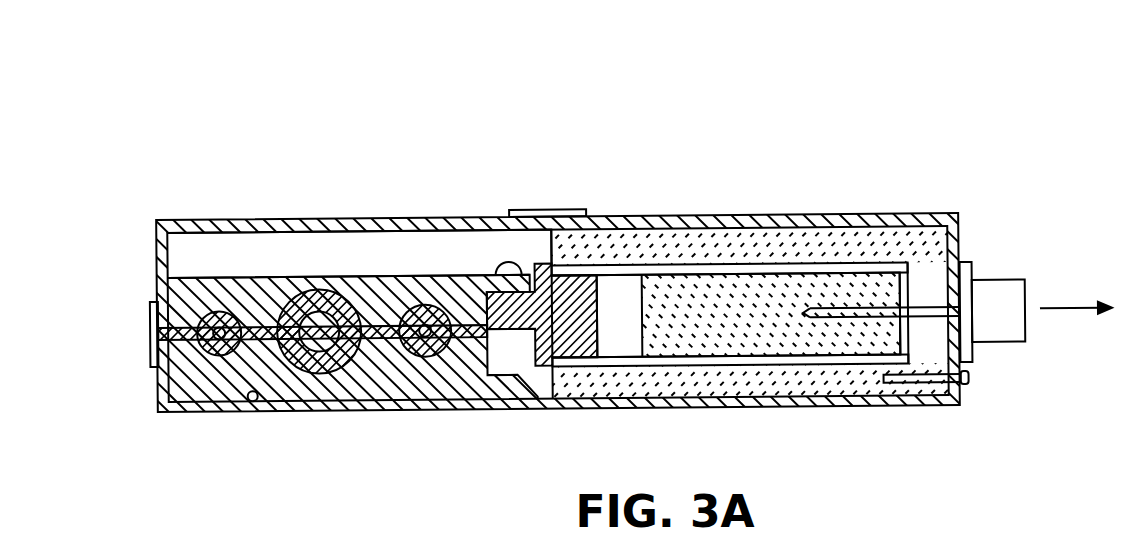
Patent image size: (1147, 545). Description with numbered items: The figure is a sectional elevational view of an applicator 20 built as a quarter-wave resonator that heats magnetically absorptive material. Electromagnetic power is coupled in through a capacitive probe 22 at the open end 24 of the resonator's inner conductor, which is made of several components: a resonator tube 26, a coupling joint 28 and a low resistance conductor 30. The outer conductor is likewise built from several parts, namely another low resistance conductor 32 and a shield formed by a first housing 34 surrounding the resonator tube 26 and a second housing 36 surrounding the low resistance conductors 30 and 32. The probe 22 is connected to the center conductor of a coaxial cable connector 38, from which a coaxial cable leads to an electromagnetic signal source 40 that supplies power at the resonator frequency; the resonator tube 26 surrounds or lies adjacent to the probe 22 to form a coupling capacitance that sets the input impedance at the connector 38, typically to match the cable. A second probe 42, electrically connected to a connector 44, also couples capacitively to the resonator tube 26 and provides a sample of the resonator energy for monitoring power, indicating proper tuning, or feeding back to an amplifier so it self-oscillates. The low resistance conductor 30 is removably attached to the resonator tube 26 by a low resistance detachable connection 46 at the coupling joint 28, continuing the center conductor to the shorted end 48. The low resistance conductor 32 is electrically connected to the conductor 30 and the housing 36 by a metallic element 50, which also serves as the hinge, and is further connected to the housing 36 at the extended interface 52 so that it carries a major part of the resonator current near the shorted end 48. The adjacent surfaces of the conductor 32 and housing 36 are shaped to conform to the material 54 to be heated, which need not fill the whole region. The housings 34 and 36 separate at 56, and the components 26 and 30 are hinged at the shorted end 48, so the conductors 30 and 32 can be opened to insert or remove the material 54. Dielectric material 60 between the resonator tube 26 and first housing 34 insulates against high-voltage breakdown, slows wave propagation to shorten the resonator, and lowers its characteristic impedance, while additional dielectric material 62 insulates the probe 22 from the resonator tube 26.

The applicator 20 is at (573, 253).
The capacitive probe 22 is at (885, 317).
The open end 24 is at (955, 355).
The resonator tube 26 is at (792, 267).
The coupling joint 28 is at (544, 388).
The low resistance conductor 30 is at (210, 276).
The low resistance conductor 32 is at (450, 388).
The first housing 34 is at (720, 219).
The second housing 36 is at (289, 220).
The coaxial cable connector 38 is at (1012, 287).
The electromagnetic signal source 40 is at (1072, 315).
The probe 42 is at (902, 390).
The connector 44 is at (968, 390).
The low resistance detachable connection 46 is at (505, 269).
The shorted end 48 is at (150, 303).
The metallic element 50 is at (150, 366).
The extended interface 52 is at (250, 403).
The material to be heated 54 is at (383, 345).
The separation point 56 is at (556, 213).
The dielectric material 60 is at (876, 238).
The additional dielectric material 62 is at (672, 270).